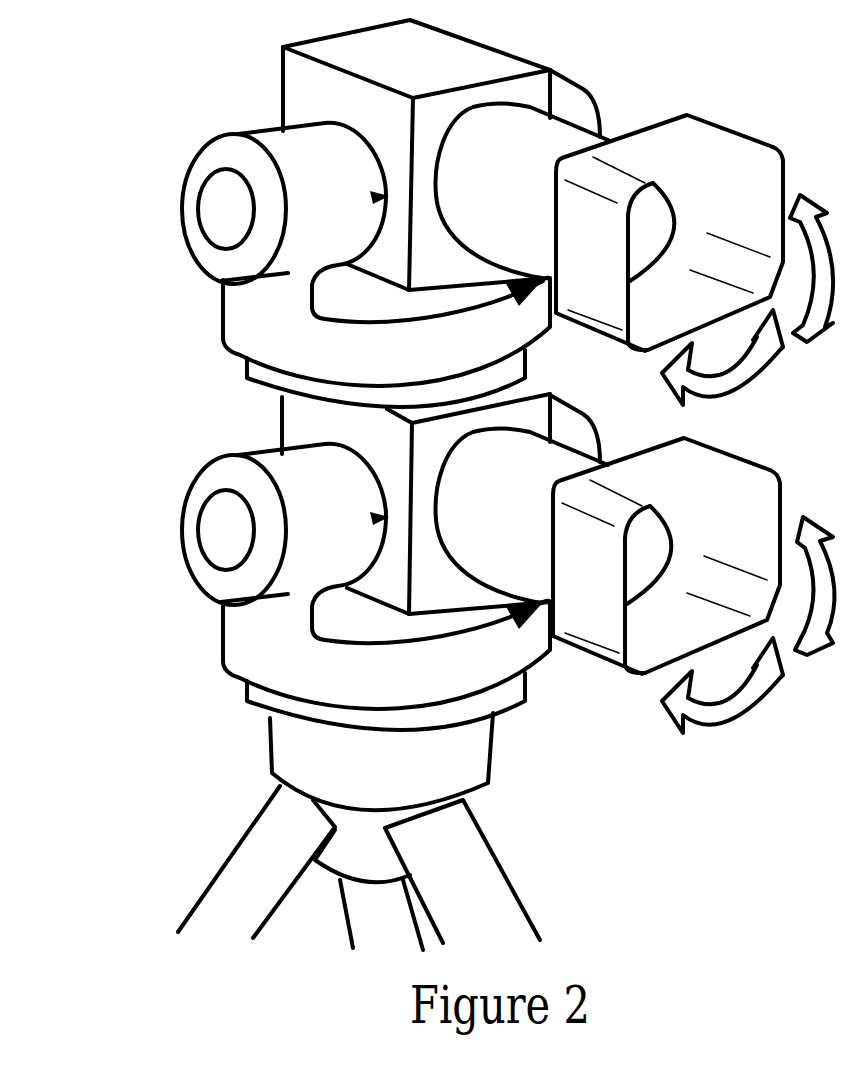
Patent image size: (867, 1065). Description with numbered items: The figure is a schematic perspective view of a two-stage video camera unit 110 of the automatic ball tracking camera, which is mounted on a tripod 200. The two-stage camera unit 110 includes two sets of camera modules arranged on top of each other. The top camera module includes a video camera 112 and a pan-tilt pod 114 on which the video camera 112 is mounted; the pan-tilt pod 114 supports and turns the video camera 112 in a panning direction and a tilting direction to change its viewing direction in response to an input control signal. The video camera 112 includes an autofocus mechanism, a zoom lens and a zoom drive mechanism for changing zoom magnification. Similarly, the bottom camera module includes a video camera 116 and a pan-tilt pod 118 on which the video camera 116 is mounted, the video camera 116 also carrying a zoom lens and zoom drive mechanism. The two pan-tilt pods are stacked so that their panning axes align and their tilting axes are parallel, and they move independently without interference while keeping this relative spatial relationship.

The two-stage video camera unit 110 is at (113, 15).
The video camera 112 is at (281, 97).
The pan-tilt pod 114 is at (223, 312).
The video camera 116 is at (278, 431).
The pan-tilt pod 118 is at (223, 645).
The tripod 200 is at (270, 757).